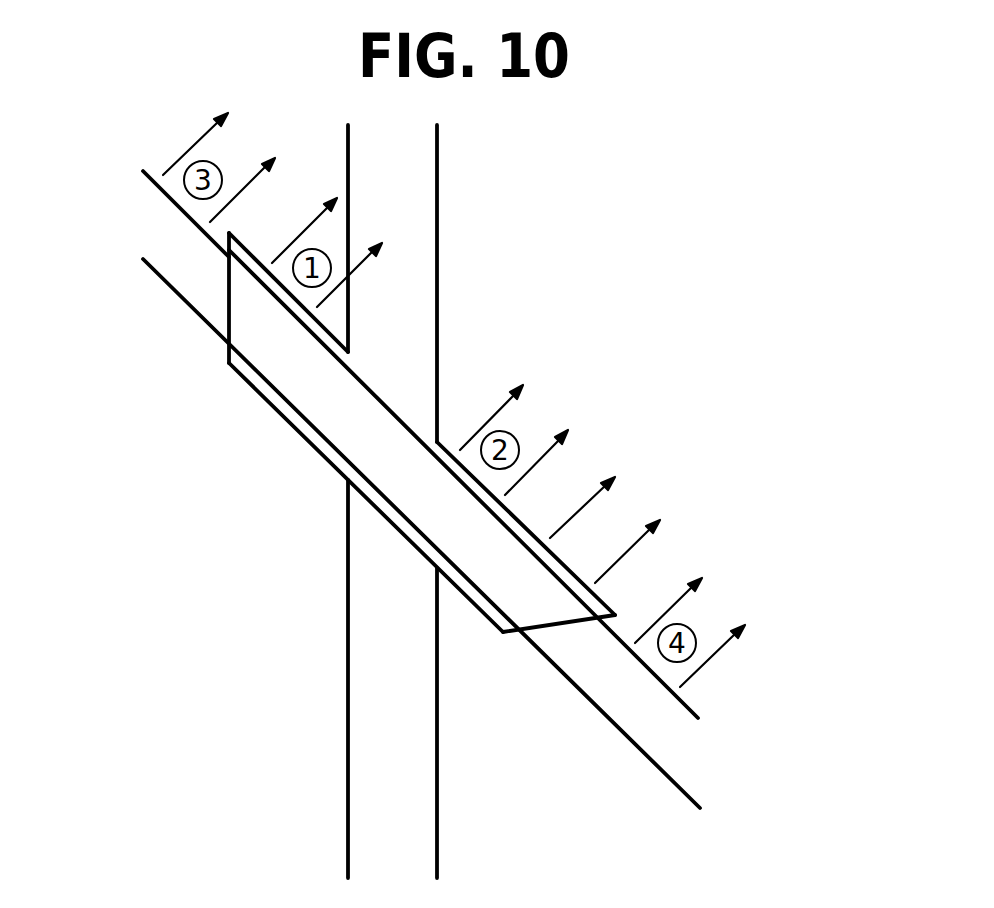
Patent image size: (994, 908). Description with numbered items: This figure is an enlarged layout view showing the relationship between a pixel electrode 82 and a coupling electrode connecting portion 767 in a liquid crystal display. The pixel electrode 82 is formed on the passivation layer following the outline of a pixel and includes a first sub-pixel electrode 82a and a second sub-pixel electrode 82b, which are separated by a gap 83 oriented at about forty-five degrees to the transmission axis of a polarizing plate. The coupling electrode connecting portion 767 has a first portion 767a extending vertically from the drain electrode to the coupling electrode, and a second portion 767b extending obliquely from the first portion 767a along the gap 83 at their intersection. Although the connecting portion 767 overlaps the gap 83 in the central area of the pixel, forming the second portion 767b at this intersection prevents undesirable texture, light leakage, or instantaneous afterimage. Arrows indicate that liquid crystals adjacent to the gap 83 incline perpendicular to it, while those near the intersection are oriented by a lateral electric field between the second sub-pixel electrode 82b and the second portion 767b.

The coupling electrode connecting portion 767 is at (326, 501).
The first portion 767a is at (347, 577).
The second portion 767b is at (278, 412).
The pixel electrode 82 is at (513, 492).
The first sub-pixel electrode 82a is at (677, 784).
The second sub-pixel electrode 82b is at (697, 713).
The gap 83 is at (628, 703).